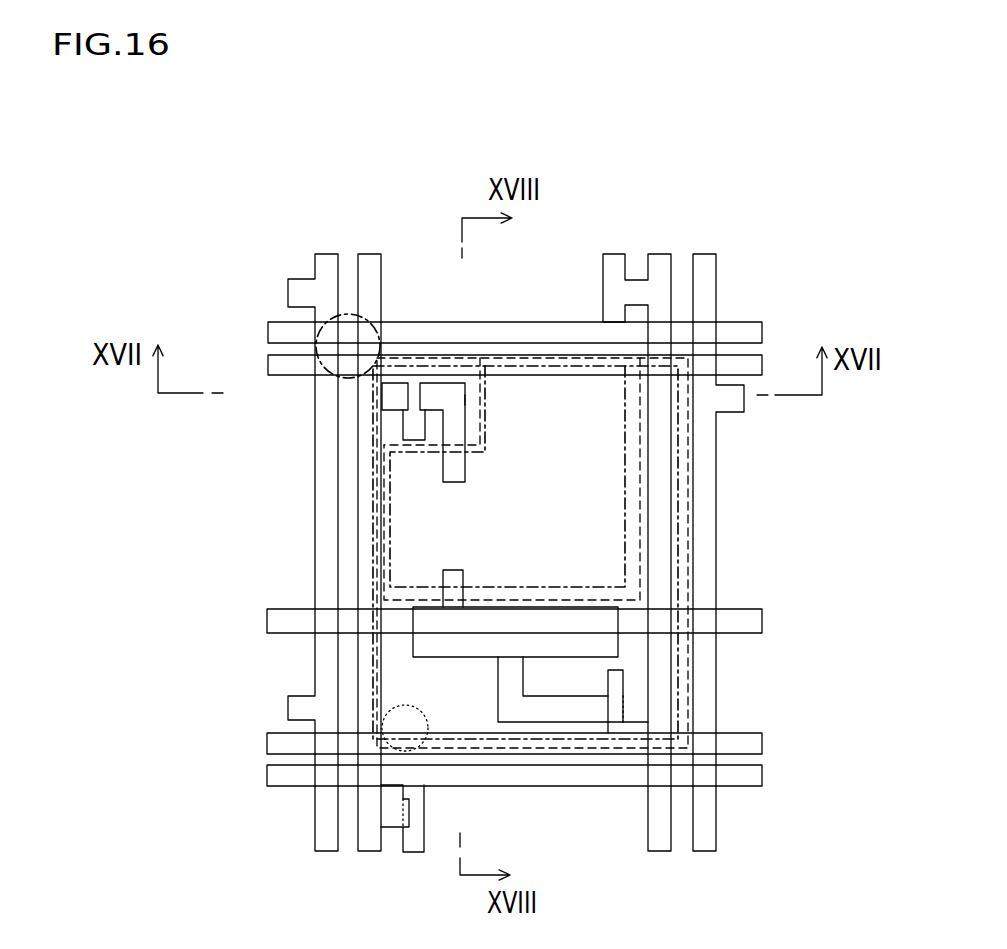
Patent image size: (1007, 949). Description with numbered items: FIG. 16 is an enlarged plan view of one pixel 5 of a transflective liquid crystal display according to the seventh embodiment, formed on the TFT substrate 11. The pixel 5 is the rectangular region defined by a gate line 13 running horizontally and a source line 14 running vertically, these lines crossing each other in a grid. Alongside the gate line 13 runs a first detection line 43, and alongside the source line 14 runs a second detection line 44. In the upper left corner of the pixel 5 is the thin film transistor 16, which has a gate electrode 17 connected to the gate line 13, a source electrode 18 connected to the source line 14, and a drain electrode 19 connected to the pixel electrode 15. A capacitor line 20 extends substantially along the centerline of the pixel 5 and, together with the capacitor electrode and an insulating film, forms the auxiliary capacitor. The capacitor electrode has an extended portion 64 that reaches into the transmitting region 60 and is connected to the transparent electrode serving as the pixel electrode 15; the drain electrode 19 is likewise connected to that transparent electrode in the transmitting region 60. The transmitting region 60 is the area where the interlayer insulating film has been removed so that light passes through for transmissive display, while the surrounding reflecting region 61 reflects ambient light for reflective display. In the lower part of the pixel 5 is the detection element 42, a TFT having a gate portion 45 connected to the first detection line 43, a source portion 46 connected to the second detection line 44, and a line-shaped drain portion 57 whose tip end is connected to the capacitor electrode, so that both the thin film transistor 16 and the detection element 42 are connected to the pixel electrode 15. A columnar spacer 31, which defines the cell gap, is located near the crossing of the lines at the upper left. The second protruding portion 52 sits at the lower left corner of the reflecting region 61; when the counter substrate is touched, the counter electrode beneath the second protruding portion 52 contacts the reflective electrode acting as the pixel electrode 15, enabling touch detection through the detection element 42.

The TFT substrate 11 is at (176, 217).
The second detection line 44 is at (325, 263).
The source line 14 is at (373, 265).
The first detection line 43 is at (277, 332).
The gate line 13 is at (277, 365).
The capacitor line 20 is at (286, 620).
The columnar spacer 31 is at (328, 312).
The source electrode 18 is at (393, 395).
The drain electrode 19 is at (438, 395).
The gate electrode 17 is at (418, 433).
The thin film transistor 16 is at (481, 405).
The pixel 5 is at (537, 388).
The pixel electrode 15 is at (690, 480).
The transmitting region 60 is at (390, 482).
The reflecting region 61 is at (390, 427).
The extended portion 64 is at (452, 575).
The drain portion 57 is at (573, 711).
The gate portion 45 is at (615, 672).
The source portion 46 is at (632, 708).
The detection element 42 is at (620, 739).
The second protruding portion 52 is at (428, 735).